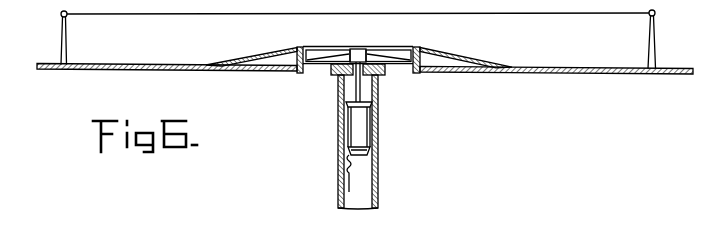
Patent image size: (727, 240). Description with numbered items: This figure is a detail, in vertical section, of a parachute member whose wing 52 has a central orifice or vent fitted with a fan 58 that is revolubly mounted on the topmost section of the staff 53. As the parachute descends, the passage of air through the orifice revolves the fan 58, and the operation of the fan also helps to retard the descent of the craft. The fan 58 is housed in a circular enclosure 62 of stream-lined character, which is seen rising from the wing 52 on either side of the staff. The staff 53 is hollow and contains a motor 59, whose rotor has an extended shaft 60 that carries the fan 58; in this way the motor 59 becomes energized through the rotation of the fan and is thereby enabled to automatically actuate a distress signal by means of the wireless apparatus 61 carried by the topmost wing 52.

The wing 52 is at (570, 72).
The staff 53 is at (378, 172).
The fan 58 is at (390, 58).
The motor 59 is at (363, 125).
The extended shaft 60 is at (361, 88).
The wireless apparatus 61 is at (592, 14).
The circular enclosure 62 is at (460, 57).